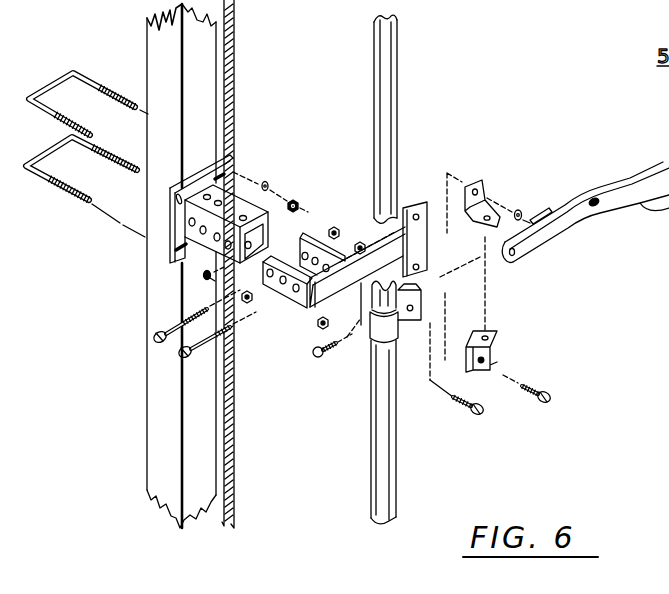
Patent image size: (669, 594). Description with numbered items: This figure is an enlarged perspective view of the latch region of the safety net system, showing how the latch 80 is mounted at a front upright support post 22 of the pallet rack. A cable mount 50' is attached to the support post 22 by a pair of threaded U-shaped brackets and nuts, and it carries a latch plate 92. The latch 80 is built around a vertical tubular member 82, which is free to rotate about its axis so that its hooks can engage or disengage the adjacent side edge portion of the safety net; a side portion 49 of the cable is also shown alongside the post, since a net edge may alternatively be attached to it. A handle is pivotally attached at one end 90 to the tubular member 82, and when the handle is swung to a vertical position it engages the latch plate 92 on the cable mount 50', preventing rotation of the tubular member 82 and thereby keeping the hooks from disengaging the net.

The front upright support post 22 is at (145, 432).
The side portion of the cable 49 is at (233, 44).
The cable mount 50' is at (158, 218).
The vertical tubular member 82 is at (402, 50).
The handle end 90 is at (514, 257).
The latch plate 92 is at (317, 307).
The latch 80 is at (565, 323).